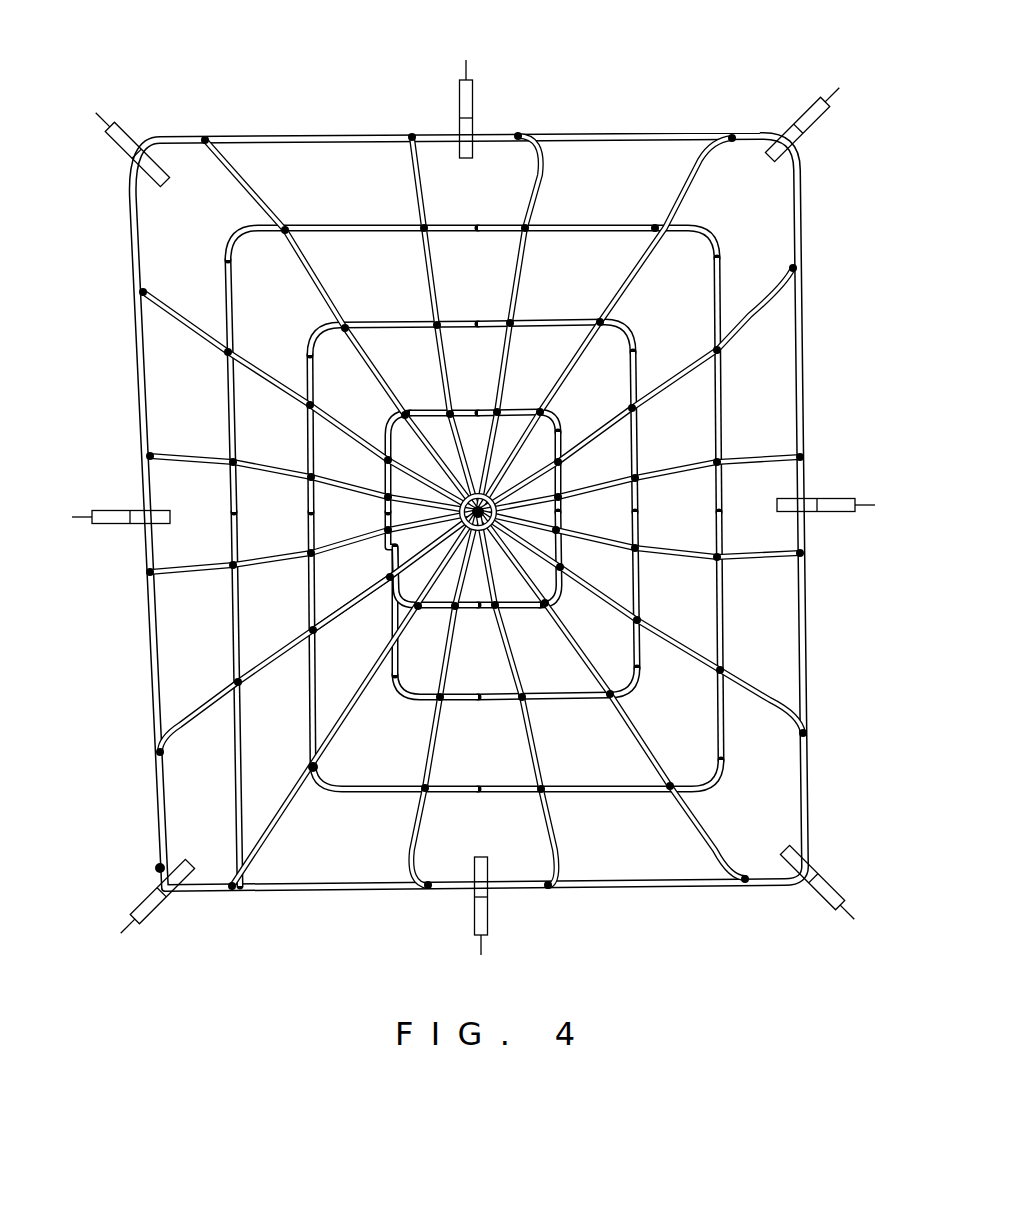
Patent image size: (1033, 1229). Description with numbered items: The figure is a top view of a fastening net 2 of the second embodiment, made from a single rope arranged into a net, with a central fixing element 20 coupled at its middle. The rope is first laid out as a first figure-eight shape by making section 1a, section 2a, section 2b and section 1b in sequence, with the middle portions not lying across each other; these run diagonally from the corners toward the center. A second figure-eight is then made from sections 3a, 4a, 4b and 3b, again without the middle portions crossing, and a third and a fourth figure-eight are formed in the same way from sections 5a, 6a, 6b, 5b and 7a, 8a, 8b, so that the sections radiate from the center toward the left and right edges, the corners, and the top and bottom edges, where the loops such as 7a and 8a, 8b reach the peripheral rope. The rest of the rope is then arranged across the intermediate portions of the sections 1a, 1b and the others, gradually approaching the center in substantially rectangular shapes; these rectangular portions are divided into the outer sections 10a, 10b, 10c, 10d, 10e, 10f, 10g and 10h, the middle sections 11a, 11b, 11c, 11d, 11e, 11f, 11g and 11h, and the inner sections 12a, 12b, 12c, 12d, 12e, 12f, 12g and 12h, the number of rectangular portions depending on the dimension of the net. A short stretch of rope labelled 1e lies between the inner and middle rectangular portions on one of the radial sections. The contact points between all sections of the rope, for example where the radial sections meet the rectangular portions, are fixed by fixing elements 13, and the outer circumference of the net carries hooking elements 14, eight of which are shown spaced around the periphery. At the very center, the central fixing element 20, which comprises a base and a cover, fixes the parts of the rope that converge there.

The fastening net 2 is at (200, 905).
The section 1a is at (193, 712).
The section 1b is at (288, 795).
The radial rope segment 1e is at (385, 585).
The section 2a is at (690, 175).
The section 2b is at (753, 313).
The section 3a is at (185, 452).
The section 3b is at (182, 570).
The section 4a is at (747, 452).
The section 4b is at (771, 528).
The section 5a is at (257, 192).
The section 5b is at (181, 315).
The section 6a is at (766, 692).
The section 6b is at (712, 832).
The section 7a is at (540, 196).
The section 8a is at (558, 831).
The section 8b is at (422, 838).
The section 10a is at (233, 652).
The section 10b is at (228, 388).
The section 10c is at (338, 227).
The section 10d is at (607, 229).
The section 10e is at (720, 375).
The section 10f is at (722, 612).
The section 10g is at (647, 792).
The section 10h is at (395, 790).
The section 11a is at (309, 570).
The section 11b is at (306, 450).
The section 11c is at (373, 318).
The section 11d is at (538, 321).
The section 11e is at (637, 460).
The section 11f is at (640, 568).
The section 11g is at (540, 699).
The section 11h is at (418, 698).
The section 12a is at (388, 548).
The section 12b is at (387, 476).
The section 12c is at (428, 410).
The section 12d is at (520, 410).
The section 12e is at (560, 468).
The section 12f is at (558, 537).
The section 12g is at (528, 610).
The section 12h is at (434, 610).
The fixing element 13 is at (316, 760).
The hooking element 14 is at (116, 112).
The central fixing element 20 is at (500, 511).